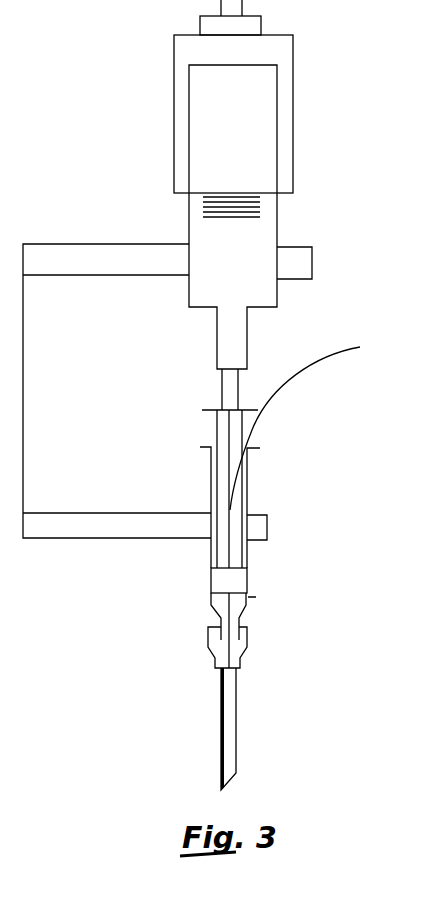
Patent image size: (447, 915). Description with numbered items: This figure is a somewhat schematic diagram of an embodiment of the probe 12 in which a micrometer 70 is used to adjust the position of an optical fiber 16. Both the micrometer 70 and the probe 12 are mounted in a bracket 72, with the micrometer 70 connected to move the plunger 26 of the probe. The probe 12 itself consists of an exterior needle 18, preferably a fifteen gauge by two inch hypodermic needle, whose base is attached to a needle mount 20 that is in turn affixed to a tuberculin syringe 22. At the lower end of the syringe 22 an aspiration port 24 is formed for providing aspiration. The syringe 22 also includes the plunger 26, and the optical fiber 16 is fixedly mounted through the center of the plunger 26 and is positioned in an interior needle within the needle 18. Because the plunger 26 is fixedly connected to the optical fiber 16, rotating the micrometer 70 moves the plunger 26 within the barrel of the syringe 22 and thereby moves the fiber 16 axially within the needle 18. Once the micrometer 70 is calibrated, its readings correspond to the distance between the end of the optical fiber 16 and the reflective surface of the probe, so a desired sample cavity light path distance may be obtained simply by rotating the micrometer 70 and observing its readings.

The probe 12 is at (268, 443).
The optical fiber 16 is at (295, 382).
The exterior needle 18 is at (231, 712).
The needle mount 20 is at (250, 635).
The tuberculin syringe 22 is at (250, 479).
The aspiration port 24 is at (262, 597).
The plunger 26 is at (216, 431).
The micrometer 70 is at (293, 53).
The bracket 72 is at (312, 247).